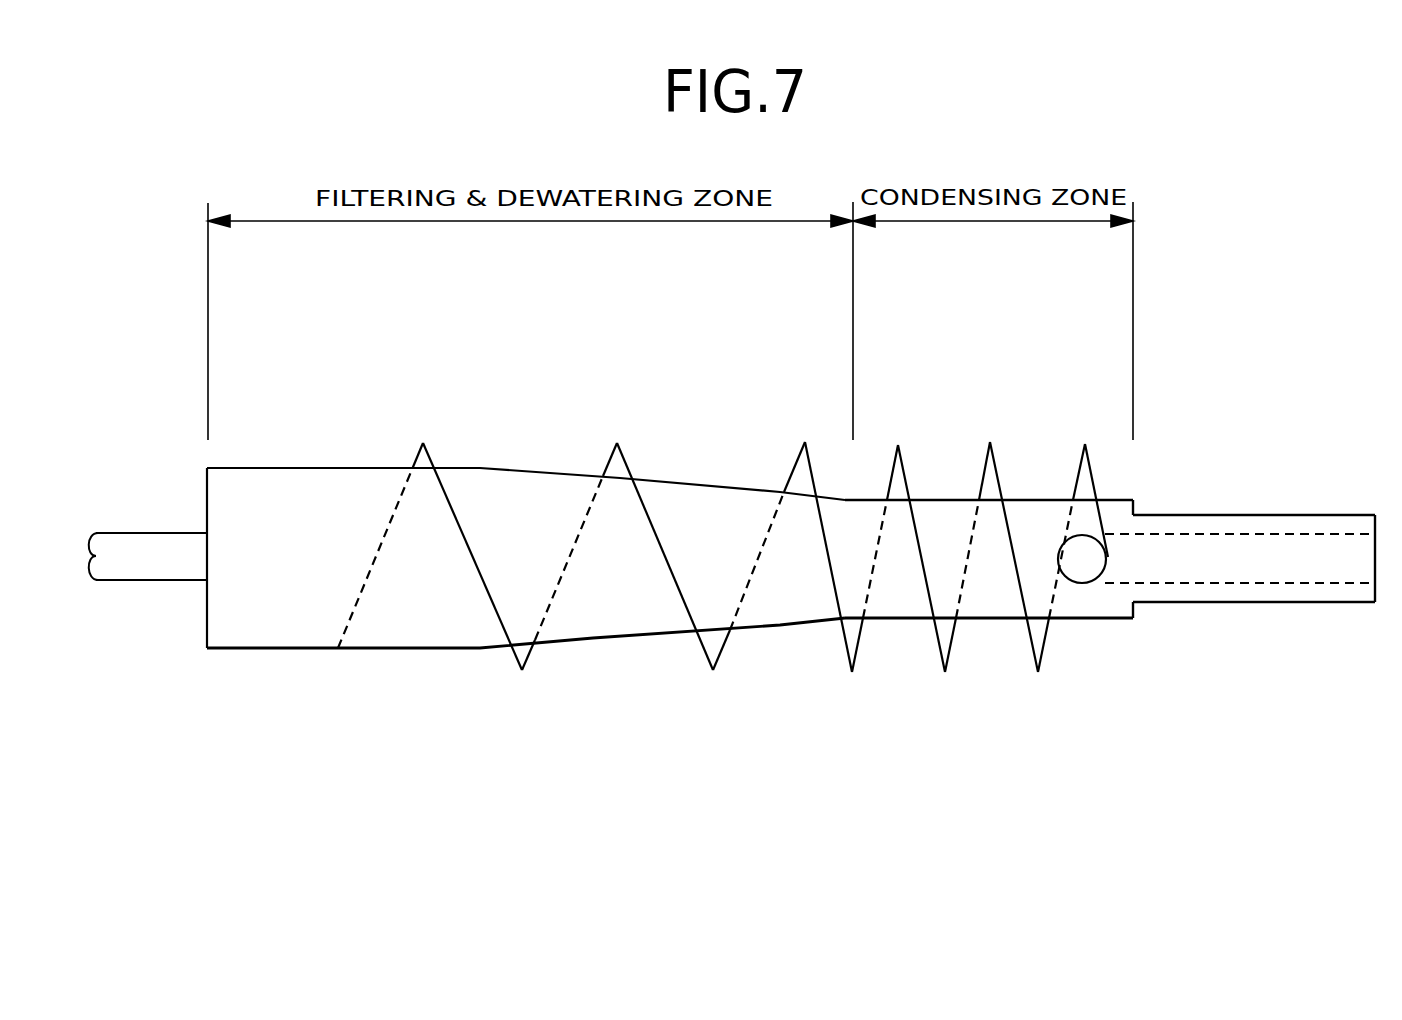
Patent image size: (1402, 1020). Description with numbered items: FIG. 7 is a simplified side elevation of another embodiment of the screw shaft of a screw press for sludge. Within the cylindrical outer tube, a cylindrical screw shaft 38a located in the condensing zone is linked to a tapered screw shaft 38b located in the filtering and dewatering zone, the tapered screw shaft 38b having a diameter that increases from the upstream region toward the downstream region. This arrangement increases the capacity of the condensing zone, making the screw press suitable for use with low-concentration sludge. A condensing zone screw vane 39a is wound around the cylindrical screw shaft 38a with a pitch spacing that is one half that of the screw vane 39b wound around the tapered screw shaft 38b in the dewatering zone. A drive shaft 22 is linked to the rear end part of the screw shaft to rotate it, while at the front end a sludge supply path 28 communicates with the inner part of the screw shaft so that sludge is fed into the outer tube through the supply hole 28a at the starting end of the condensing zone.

The drive shaft 22 is at (143, 562).
The sludge supply path 28 is at (1242, 560).
The shaft bearing / end portion 28a is at (1082, 559).
The cylindrical screw shaft 38a is at (997, 598).
The tapered screw shaft 38b is at (595, 620).
The condensing zone screw vane 39a is at (907, 482).
The screw vane in the dewatering zone 39b is at (603, 473).